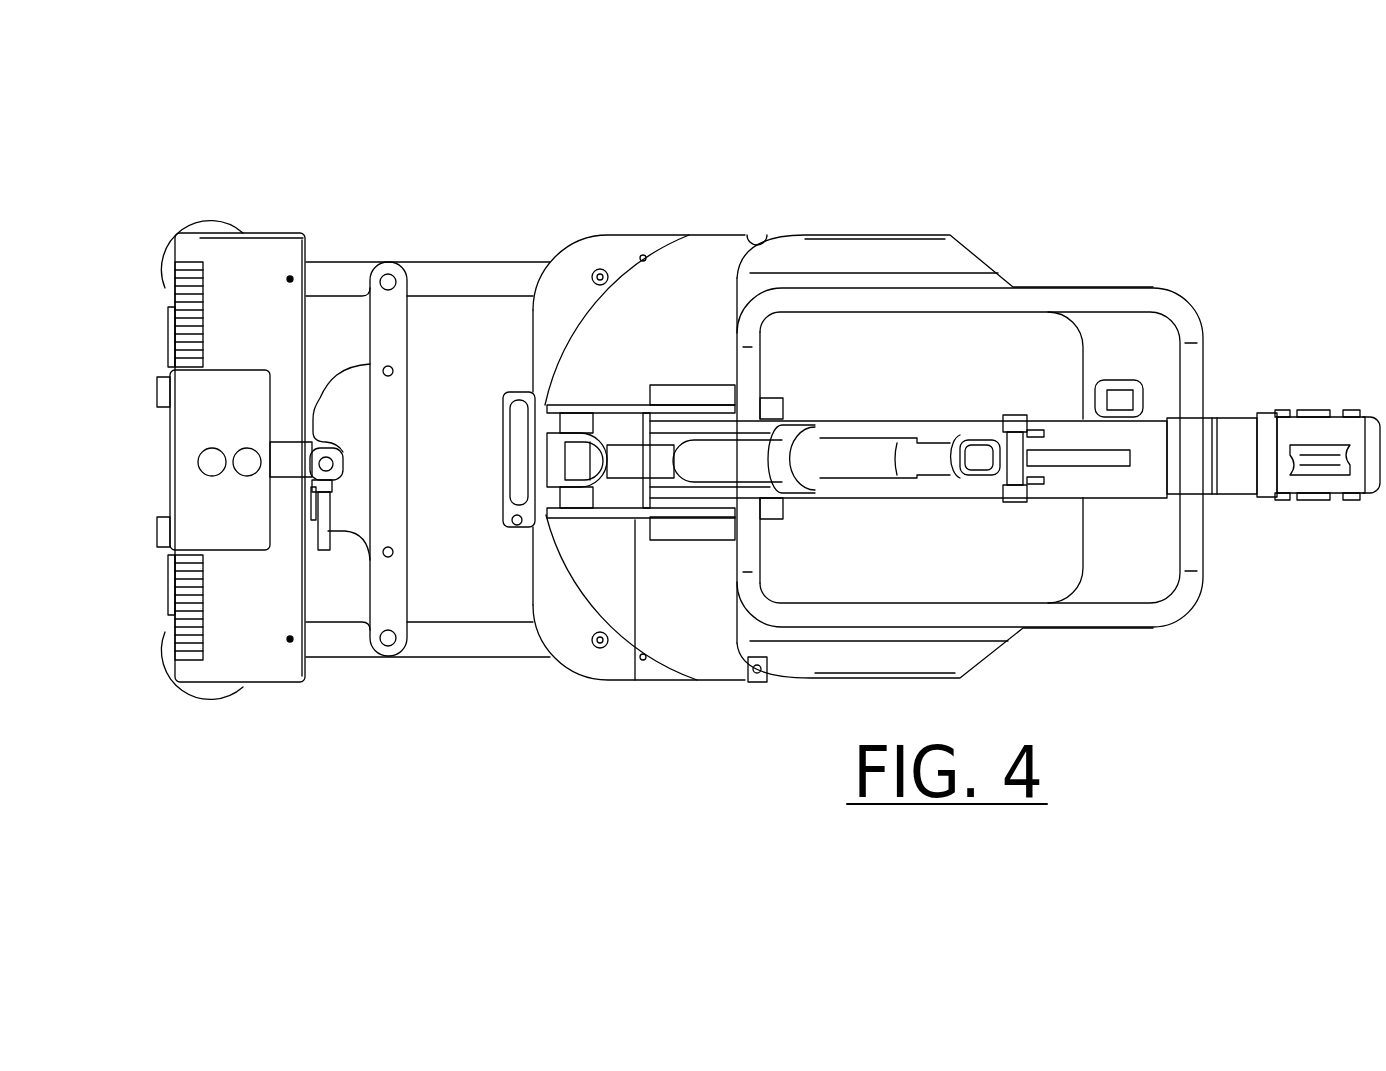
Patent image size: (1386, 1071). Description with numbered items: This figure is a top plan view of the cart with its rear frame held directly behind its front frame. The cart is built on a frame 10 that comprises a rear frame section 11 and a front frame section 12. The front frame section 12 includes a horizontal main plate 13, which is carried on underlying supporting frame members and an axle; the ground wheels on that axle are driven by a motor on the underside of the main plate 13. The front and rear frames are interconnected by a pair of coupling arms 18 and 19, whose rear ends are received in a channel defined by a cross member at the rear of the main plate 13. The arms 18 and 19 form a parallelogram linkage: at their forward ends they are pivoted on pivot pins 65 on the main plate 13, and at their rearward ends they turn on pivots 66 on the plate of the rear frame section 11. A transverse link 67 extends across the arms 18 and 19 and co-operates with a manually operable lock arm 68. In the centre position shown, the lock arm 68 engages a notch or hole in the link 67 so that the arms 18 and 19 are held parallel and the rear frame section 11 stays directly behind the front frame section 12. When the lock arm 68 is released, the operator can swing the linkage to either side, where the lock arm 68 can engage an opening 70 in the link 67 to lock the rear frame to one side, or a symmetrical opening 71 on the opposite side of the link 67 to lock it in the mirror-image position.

The frame 10 is at (610, 122).
The rear frame section 11 is at (278, 175).
The front frame section 12 is at (907, 196).
The main plate 13 is at (657, 253).
The coupling arm 18 is at (448, 643).
The coupling arm 19 is at (437, 277).
The pivot pins 65 is at (597, 268).
The pivots 66 is at (308, 272).
The transverse link 67 is at (377, 437).
The lock arm 68 is at (331, 492).
The opening 70 is at (393, 555).
The symmetrical opening 71 is at (393, 370).